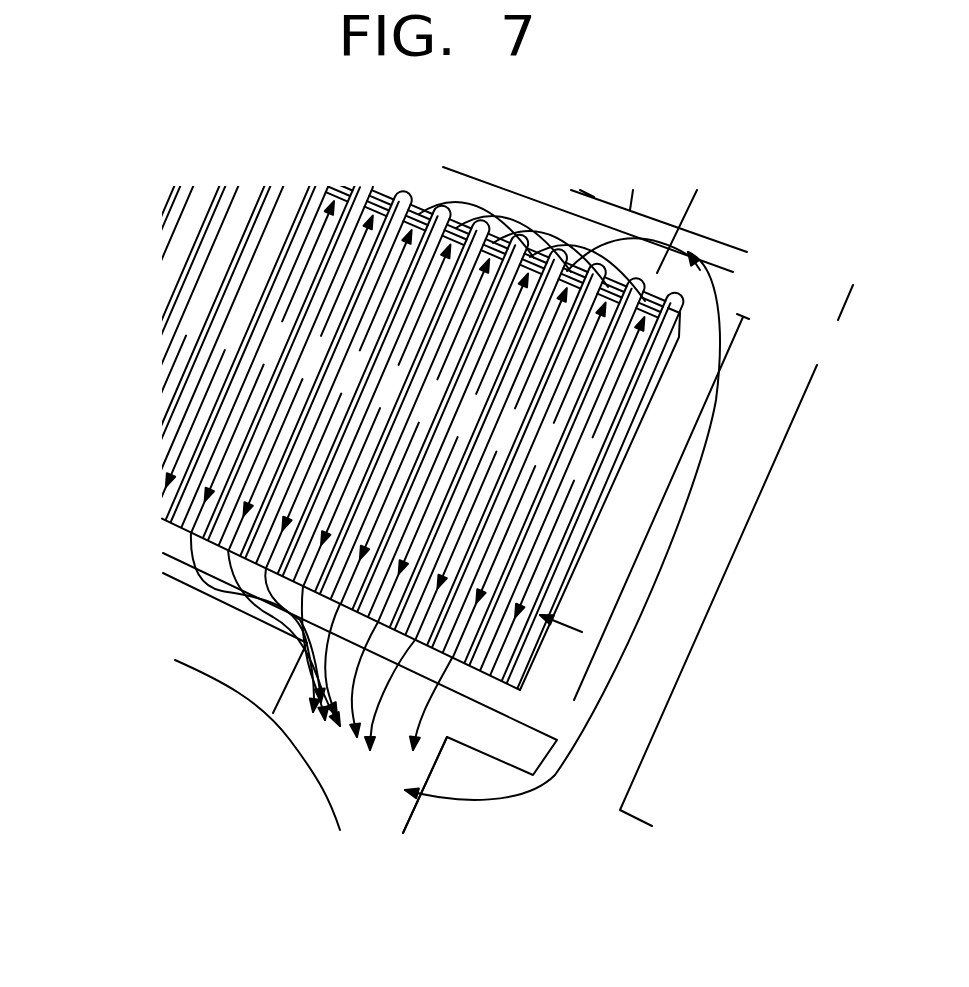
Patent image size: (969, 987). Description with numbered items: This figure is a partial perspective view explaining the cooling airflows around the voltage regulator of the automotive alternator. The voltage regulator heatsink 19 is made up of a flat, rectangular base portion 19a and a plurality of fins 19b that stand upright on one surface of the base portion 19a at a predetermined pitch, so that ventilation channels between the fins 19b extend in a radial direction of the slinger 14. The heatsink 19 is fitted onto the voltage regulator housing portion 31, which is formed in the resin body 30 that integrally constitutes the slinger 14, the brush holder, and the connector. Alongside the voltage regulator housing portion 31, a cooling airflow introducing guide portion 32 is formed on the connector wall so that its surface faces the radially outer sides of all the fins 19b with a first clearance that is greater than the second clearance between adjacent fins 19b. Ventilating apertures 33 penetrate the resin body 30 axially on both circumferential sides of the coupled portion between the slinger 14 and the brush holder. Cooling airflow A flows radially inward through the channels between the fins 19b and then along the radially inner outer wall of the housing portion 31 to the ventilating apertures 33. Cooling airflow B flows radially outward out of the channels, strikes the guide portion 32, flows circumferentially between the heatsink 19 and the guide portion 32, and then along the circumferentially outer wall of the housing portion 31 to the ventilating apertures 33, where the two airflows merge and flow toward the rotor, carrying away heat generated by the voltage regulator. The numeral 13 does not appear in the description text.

The electrode head 13 is at (163, 142).
The slinger 14 is at (245, 740).
The voltage regulator heatsink 19 is at (357, 413).
The base portion 19a is at (173, 470).
The fins 19b is at (193, 377).
The resin body 30 is at (755, 358).
The voltage regulator housing portion 31 is at (195, 558).
The cooling airflow introducing guide portion 32 is at (615, 235).
The ventilating apertures 33 is at (352, 787).